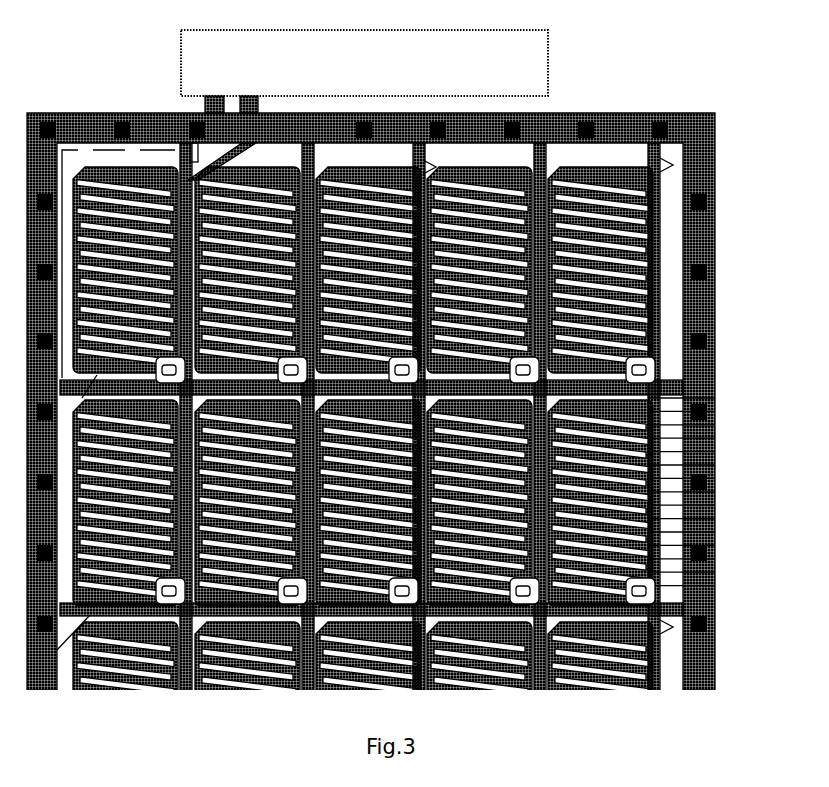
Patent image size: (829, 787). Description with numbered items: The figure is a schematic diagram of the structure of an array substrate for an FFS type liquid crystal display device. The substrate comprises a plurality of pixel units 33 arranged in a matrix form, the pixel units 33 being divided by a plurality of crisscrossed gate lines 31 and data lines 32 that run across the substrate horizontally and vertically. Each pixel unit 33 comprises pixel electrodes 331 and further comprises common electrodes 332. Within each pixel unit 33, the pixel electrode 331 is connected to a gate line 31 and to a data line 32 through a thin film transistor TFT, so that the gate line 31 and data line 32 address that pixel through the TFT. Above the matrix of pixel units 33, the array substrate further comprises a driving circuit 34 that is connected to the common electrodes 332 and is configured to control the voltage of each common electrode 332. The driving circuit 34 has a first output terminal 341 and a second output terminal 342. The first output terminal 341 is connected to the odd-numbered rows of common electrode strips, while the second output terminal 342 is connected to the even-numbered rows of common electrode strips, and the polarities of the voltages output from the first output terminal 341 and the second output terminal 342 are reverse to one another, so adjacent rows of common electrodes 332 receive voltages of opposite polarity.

The gate line 31 is at (655, 601).
The data line 32 is at (655, 325).
The pixel unit 33 is at (78, 150).
The pixel electrode 331 is at (620, 258).
The common electrode 332 is at (612, 172).
The driving circuit 34 is at (548, 72).
The first output terminal 341 is at (217, 100).
The second output terminal 342 is at (262, 102).
The thin film transistor TFT is at (660, 368).